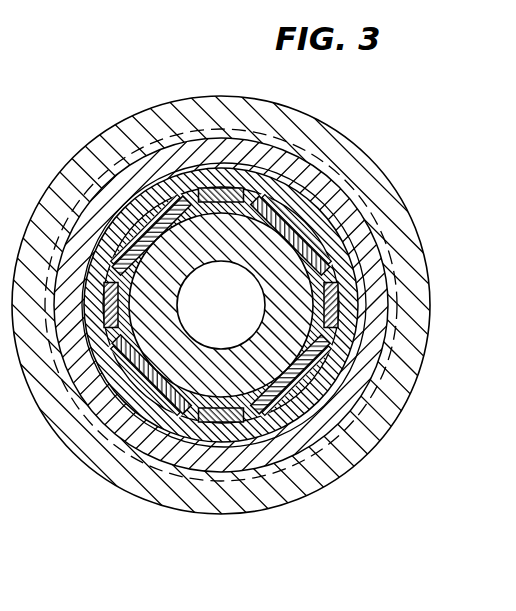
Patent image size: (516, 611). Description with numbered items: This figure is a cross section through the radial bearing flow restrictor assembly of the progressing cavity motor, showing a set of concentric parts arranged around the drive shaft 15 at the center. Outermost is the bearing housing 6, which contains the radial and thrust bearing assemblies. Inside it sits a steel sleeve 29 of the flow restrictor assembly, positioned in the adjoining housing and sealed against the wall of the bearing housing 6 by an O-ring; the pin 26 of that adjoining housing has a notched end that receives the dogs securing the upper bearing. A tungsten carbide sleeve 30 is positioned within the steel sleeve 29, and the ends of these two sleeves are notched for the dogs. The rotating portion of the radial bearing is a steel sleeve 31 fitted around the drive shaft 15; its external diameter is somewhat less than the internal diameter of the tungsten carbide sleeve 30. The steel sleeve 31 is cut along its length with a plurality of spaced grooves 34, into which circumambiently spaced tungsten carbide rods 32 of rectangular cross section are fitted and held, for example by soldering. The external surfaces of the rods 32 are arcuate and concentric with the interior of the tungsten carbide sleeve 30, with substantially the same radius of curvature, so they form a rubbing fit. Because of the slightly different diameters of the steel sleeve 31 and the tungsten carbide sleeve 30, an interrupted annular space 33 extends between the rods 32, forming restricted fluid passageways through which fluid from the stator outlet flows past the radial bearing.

The bearing housing 6 is at (345, 128).
The drive shaft 15 is at (163, 312).
The pin 26 is at (270, 157).
The steel sleeve 29 is at (152, 185).
The tungsten carbide sleeve 30 is at (362, 232).
The steel sleeve 31 is at (132, 347).
The tungsten carbide rods 32 is at (167, 193).
The interrupted annular space 33 is at (195, 193).
The grooves 34 is at (112, 242).